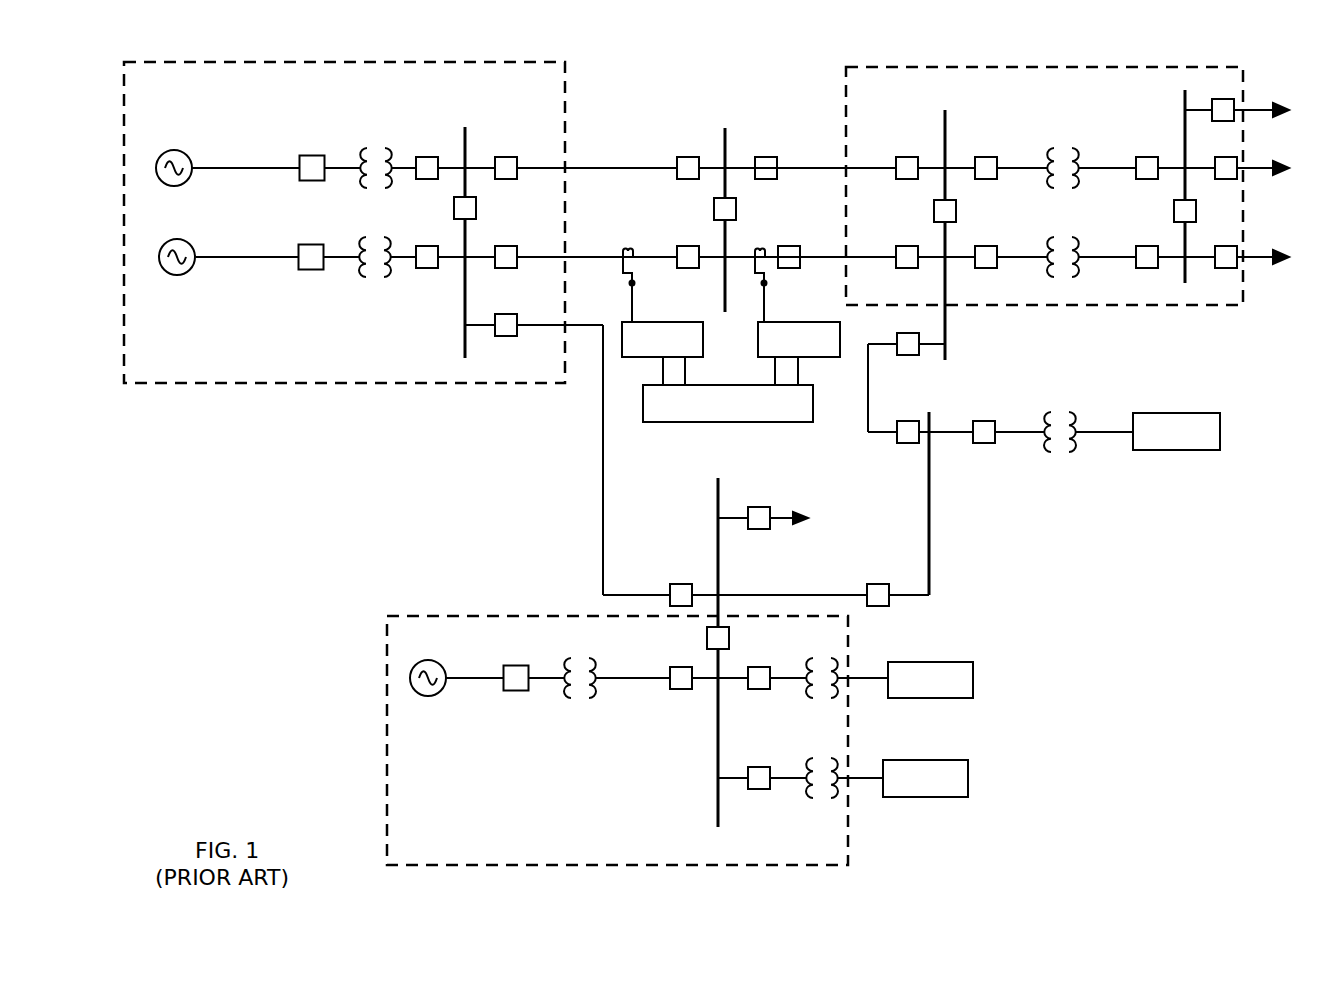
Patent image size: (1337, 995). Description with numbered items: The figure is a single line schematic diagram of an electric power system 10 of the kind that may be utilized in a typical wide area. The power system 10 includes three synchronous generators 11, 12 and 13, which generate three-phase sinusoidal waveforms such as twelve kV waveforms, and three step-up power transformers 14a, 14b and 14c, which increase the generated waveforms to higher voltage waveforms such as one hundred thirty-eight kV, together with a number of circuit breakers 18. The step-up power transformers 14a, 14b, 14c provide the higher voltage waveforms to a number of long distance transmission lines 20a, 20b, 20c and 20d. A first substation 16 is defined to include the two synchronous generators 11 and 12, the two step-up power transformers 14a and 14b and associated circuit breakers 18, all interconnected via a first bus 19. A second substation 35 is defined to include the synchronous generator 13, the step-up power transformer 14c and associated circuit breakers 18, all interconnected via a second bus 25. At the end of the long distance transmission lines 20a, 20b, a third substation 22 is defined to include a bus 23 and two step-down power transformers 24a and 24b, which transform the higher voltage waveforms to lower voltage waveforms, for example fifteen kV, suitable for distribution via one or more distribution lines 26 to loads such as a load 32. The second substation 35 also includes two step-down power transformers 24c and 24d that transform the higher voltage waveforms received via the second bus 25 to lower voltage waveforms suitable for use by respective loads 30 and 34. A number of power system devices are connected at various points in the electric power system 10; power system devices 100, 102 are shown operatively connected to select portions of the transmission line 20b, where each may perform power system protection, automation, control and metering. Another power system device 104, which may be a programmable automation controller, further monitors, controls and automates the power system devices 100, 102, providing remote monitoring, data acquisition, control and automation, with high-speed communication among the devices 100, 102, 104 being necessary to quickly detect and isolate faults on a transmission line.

The electric power system 10 is at (764, 75).
The synchronous generator 11 is at (189, 149).
The synchronous generator 12 is at (191, 239).
The synchronous generator 13 is at (436, 695).
The step-up power transformer 14a is at (379, 140).
The step-up power transformer 14b is at (379, 235).
The step-up power transformer 14c is at (580, 658).
The first substation 16 is at (568, 105).
The circuit breaker 18 is at (506, 181).
The first bus 19 is at (462, 142).
The transmission line 20a is at (632, 166).
The transmission line 20b is at (590, 256).
The transmission line 20c is at (633, 594).
The transmission line 20d is at (862, 677).
The third substation 22 is at (1113, 67).
The bus 23 is at (946, 135).
The step-down power transformer 24a is at (1070, 150).
The step-down power transformer 24b is at (1070, 240).
The step-down power transformer 24c is at (822, 658).
The step-down power transformer 24d is at (820, 800).
The second bus 25 is at (720, 502).
The distribution line 26 is at (1263, 113).
The load 30 is at (975, 678).
The load 32 is at (1222, 432).
The load 34 is at (970, 778).
The second substation 35 is at (478, 615).
The power system device 100 is at (662, 353).
The power system device 102 is at (799, 353).
The power system device 104 is at (728, 403).